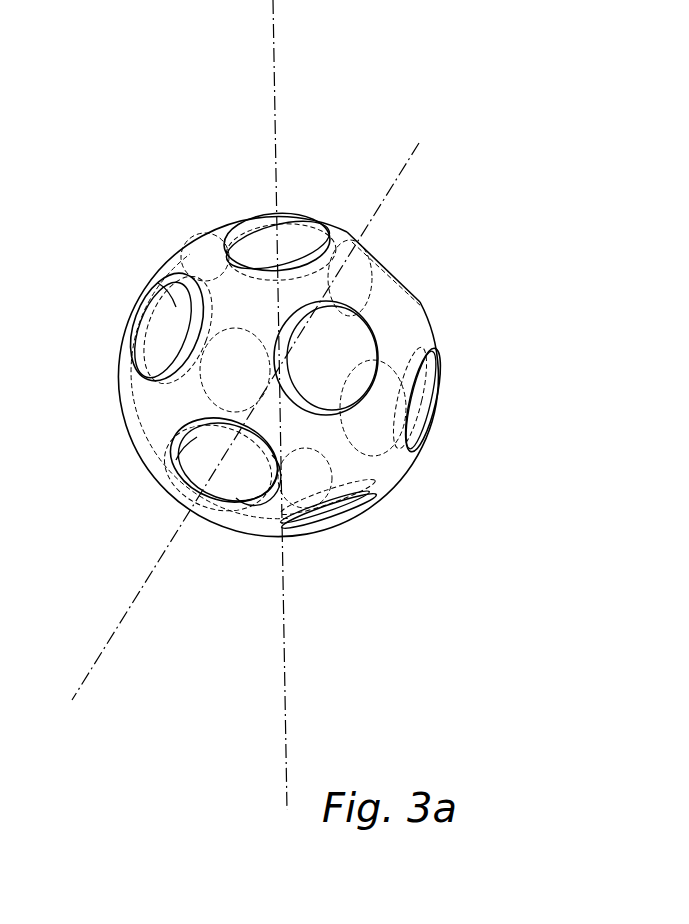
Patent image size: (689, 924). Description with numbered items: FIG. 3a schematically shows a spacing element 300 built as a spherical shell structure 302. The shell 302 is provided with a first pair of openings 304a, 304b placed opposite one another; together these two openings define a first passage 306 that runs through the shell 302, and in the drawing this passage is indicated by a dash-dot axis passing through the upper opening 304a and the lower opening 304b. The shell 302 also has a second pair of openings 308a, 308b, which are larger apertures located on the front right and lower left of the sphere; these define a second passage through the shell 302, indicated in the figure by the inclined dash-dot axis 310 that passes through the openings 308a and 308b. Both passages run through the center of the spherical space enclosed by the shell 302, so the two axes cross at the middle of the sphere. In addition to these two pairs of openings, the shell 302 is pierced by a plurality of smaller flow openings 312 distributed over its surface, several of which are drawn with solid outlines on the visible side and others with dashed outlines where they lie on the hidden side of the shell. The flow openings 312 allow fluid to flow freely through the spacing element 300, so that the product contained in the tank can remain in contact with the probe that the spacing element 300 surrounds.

The spacing element 300 is at (376, 63).
The spherical shell structure 302 is at (363, 233).
The first opening of first pair 304a is at (302, 233).
The second opening of first pair 304b is at (255, 480).
The first passage 306 is at (275, 125).
The first opening of second pair 308a is at (290, 336).
The second opening of second pair 308b is at (198, 450).
The second axis 310 is at (406, 163).
The flow openings 312 is at (243, 237).